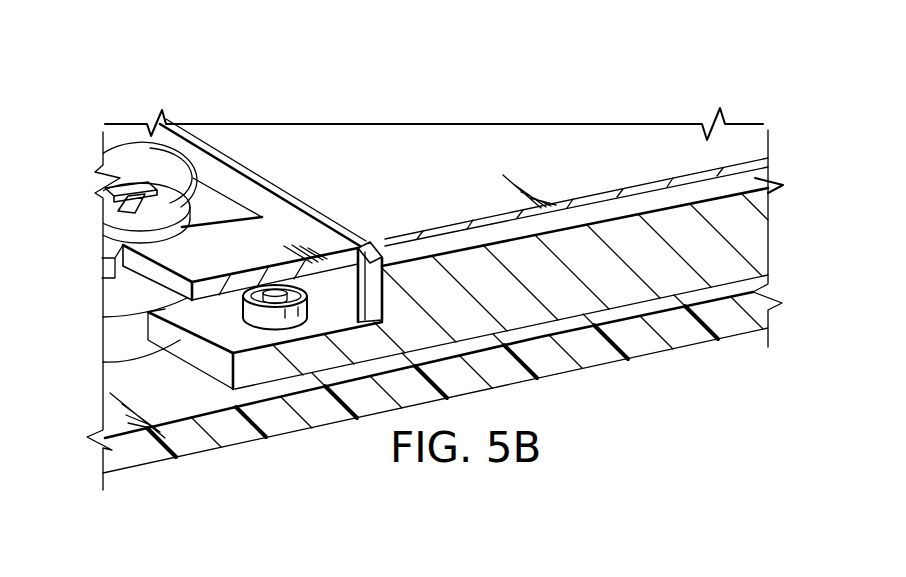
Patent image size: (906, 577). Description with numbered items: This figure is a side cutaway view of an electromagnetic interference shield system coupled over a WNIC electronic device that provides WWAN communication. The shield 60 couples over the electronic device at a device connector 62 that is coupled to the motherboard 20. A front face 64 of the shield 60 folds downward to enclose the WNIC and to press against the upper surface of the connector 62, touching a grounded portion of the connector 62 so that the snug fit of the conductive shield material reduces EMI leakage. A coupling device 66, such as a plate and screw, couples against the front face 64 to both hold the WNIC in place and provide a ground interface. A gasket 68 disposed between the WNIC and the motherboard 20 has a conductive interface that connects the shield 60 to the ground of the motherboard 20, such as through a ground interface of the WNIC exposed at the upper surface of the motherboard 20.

The motherboard 20 is at (187, 443).
The shield 60 is at (553, 138).
The device connector 62 is at (215, 363).
The front face 64 is at (288, 223).
The coupling device 66 is at (110, 212).
The gasket 68 is at (577, 323).